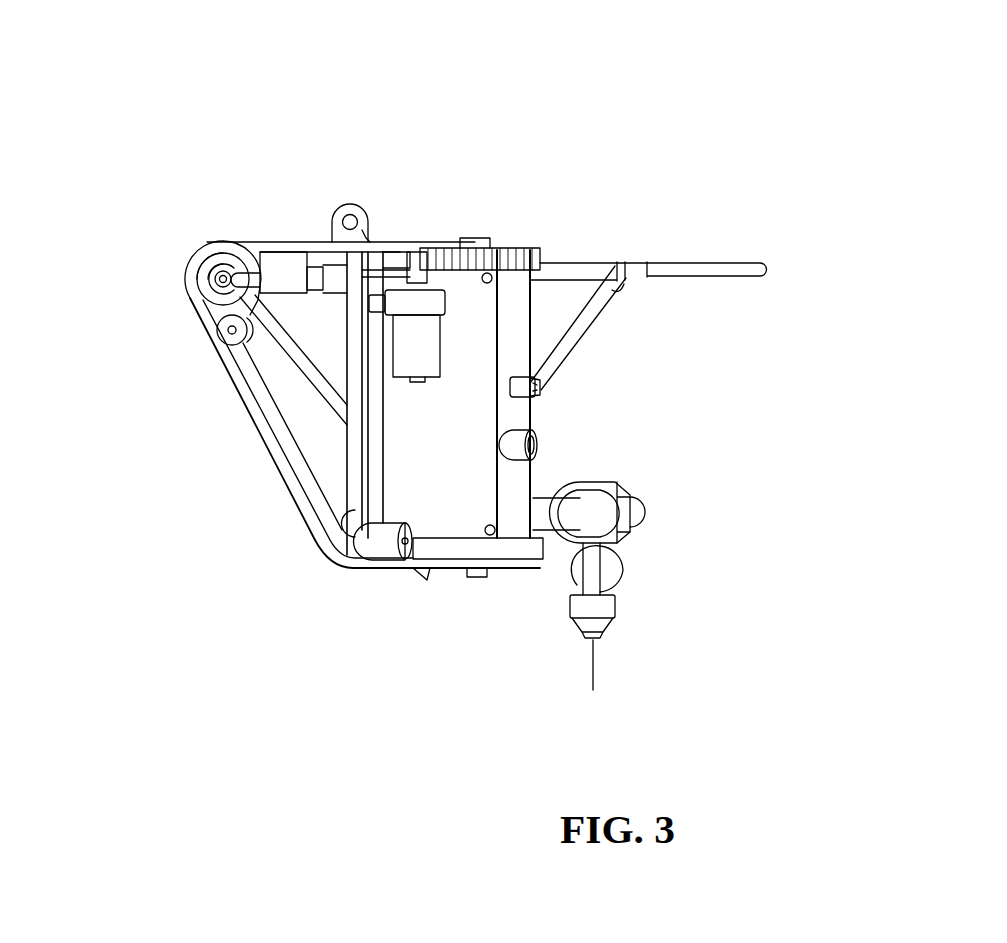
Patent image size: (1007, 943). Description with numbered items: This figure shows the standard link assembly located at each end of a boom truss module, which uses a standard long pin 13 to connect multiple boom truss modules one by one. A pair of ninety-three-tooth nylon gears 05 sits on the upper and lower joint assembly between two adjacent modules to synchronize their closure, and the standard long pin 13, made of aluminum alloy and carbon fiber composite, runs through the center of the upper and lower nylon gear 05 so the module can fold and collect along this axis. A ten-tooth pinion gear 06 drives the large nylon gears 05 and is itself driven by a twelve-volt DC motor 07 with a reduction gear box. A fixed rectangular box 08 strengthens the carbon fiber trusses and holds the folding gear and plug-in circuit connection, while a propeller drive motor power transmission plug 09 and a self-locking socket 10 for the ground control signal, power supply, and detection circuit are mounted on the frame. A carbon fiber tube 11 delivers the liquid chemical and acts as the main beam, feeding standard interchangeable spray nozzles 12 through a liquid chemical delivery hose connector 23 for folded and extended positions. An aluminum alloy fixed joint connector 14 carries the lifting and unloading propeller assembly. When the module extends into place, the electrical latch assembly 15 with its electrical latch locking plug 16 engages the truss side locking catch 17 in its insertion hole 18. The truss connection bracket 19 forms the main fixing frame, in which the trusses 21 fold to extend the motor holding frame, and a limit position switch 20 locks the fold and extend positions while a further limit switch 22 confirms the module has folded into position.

The nylon gear 05 is at (420, 273).
The pinion gear 06 is at (415, 346).
The DC motor 07 is at (513, 335).
The fixed rectangular box 08 is at (560, 263).
The propeller drive motor power transmission plug 09 is at (537, 387).
The self-locking socket 10 is at (537, 446).
The carbon fiber tube 11 is at (647, 508).
The spray nozzle 12 is at (607, 605).
The standard long pin 13 is at (472, 237).
The fixed joint connector 14 is at (353, 206).
The electrical latch assembly 15 is at (283, 270).
The electrical latch locking plug 16 is at (252, 272).
The truss side locking catch 17 is at (210, 262).
The locking catch insertion hole 18 is at (200, 276).
The truss connection bracket 19 is at (207, 310).
The limit position switch 20 is at (230, 344).
The motor holding frame 21 is at (372, 312).
The limit switch 22 is at (340, 558).
The liquid chemical delivery hose connector 23 is at (423, 575).